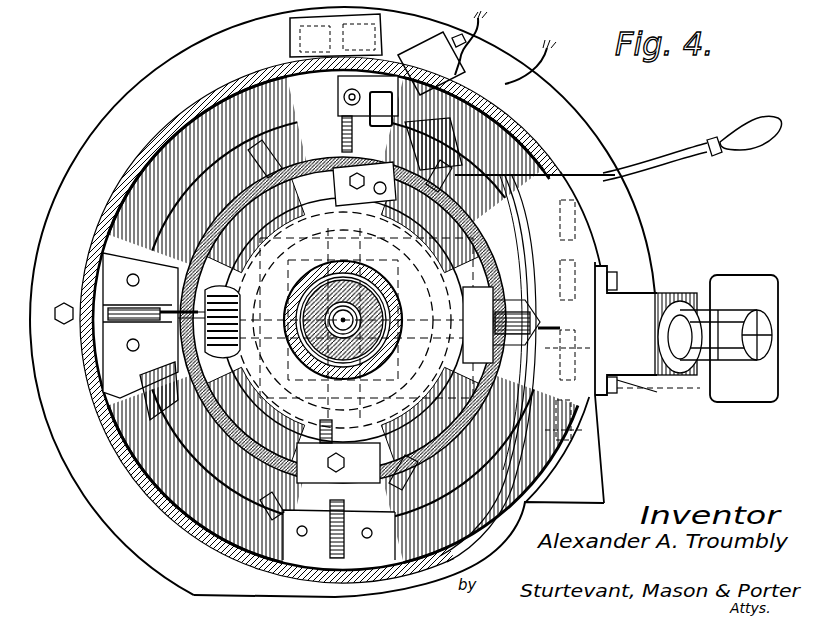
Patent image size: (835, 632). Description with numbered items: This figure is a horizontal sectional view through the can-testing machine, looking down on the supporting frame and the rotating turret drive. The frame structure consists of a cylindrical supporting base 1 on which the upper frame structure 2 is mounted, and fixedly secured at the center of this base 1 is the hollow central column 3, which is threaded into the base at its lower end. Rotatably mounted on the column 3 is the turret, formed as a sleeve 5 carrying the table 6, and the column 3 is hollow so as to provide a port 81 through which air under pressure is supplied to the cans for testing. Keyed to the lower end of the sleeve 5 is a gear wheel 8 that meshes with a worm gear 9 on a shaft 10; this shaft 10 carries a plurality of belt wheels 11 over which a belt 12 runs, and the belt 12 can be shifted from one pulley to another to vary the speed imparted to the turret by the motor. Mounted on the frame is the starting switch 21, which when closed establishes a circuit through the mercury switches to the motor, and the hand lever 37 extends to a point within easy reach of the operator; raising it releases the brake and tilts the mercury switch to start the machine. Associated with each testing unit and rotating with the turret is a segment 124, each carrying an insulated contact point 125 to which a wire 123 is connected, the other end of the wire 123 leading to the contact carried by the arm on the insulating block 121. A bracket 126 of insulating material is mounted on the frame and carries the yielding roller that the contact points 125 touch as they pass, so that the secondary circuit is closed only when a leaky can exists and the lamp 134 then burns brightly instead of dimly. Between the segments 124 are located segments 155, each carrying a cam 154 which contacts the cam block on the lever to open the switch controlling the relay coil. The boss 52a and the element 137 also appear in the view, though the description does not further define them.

The cylindrical supporting base 1 is at (113, 108).
The upper frame structure 2 is at (150, 153).
The central column 3 is at (352, 300).
The sleeve 5 is at (374, 305).
The table 6 is at (262, 228).
The gear wheel 8 is at (244, 294).
The worm gear 9 is at (185, 294).
The shaft 10 is at (195, 335).
The belt wheels 11 is at (315, 347).
The belt 12 is at (165, 448).
The starting switch 21 is at (495, 64).
The hand lever 37 is at (618, 172).
The port 81 is at (360, 318).
The block 121 is at (390, 137).
The wire 123 is at (392, 110).
The segment 124 is at (255, 178).
The contact point 125 is at (262, 150).
The bracket 126 is at (313, 35).
The lamp 134 is at (690, 316).
The terminal block 137 is at (432, 47).
The cam 154 is at (332, 488).
The segments 155 is at (375, 522).
The boss 52a is at (652, 400).